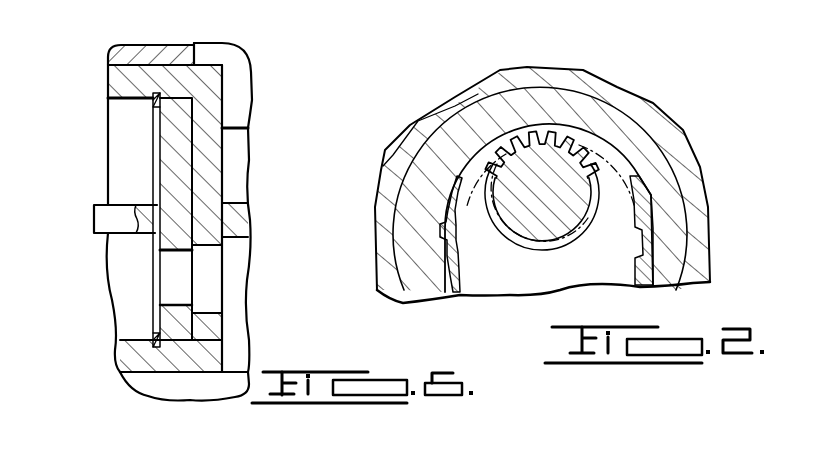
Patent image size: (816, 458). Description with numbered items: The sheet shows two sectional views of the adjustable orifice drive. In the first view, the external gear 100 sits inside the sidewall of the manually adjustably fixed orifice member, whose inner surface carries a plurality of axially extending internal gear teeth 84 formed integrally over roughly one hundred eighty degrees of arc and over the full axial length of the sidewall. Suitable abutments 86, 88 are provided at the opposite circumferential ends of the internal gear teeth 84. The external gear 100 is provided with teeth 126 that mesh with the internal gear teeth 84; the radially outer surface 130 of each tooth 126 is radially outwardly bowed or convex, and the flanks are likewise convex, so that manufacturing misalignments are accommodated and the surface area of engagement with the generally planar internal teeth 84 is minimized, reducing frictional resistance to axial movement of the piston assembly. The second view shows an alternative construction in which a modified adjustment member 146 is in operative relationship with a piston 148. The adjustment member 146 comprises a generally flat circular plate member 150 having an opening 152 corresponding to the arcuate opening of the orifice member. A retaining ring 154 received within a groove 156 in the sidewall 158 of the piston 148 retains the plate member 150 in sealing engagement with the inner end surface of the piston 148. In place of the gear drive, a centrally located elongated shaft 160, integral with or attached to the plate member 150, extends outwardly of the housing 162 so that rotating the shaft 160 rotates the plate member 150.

In FIG. 5, the housing 162 is at (146, 50).
In FIG. 5, the piston 148 is at (213, 158).
In FIG. 5, the plate member 150 is at (168, 155).
In FIG. 5, the adjustment member 146 is at (155, 133).
In FIG. 5, the shaft 160 is at (108, 218).
In FIG. 5, the opening 152 is at (168, 278).
In FIG. 5, the retaining ring 154 is at (158, 318).
In FIG. 5, the sidewall 158 is at (128, 355).
In FIG. 5, the groove 156 is at (162, 345).
In FIG. 5, the radially outer surface 130 is at (196, 455).
In FIG. 2, the abutment 86 is at (643, 245).
In FIG. 2, the internal gear teeth 84 is at (615, 172).
In FIG. 2, the abutment 88 is at (461, 297).
In FIG. 2, the external gear 100 is at (535, 222).
In FIG. 2, the teeth 126 is at (550, 133).